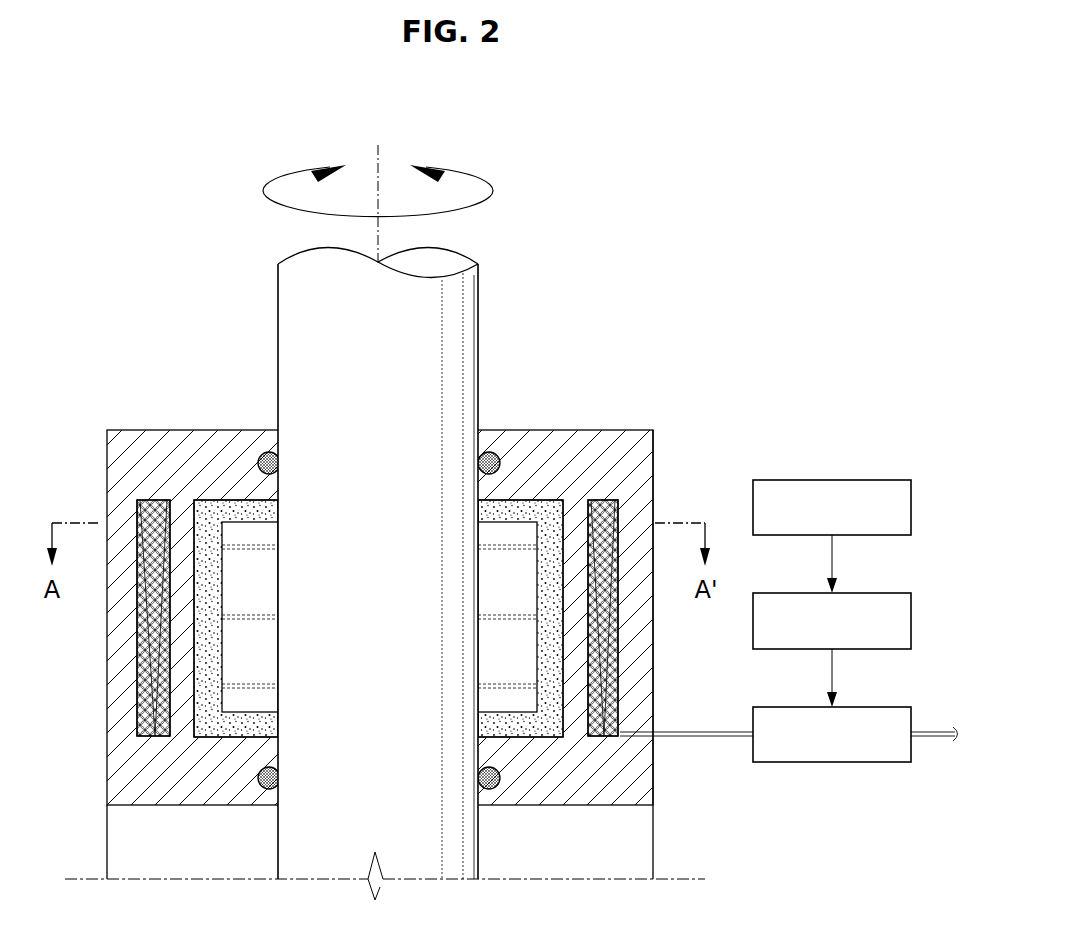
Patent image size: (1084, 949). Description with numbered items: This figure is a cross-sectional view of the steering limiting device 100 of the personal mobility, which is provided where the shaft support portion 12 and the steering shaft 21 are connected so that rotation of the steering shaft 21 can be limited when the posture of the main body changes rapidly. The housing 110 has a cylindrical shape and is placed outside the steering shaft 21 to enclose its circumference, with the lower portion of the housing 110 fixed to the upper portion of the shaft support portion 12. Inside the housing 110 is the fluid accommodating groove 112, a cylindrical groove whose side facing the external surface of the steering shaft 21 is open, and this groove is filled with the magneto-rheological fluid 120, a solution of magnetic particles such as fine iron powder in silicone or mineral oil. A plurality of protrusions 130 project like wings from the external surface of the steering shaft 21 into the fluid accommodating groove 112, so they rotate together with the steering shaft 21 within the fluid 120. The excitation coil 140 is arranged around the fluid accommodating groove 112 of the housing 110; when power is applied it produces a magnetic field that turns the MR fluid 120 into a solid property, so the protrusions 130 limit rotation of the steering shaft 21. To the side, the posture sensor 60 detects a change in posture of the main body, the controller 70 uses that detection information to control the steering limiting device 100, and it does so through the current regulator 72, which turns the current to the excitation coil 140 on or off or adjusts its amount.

The steering limiting device 100 is at (141, 400).
The steering shaft 21 is at (295, 306).
The shaft support portion 12 is at (120, 852).
The housing 110 is at (557, 442).
The fluid accommodating groove 112 is at (558, 502).
The magneto-rheological fluid 120 is at (220, 510).
The protrusions 130 is at (510, 538).
The excitation coil 140 is at (613, 521).
The posture sensor 60 is at (884, 479).
The controller 70 is at (884, 592).
The current regulator 72 is at (884, 706).